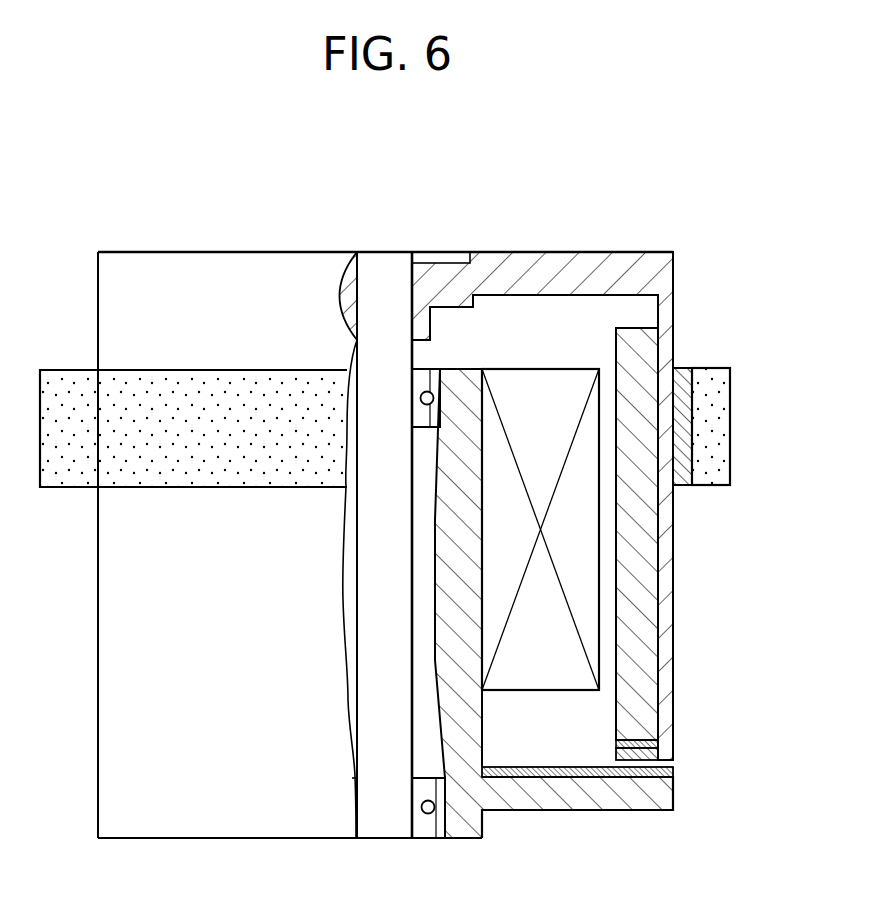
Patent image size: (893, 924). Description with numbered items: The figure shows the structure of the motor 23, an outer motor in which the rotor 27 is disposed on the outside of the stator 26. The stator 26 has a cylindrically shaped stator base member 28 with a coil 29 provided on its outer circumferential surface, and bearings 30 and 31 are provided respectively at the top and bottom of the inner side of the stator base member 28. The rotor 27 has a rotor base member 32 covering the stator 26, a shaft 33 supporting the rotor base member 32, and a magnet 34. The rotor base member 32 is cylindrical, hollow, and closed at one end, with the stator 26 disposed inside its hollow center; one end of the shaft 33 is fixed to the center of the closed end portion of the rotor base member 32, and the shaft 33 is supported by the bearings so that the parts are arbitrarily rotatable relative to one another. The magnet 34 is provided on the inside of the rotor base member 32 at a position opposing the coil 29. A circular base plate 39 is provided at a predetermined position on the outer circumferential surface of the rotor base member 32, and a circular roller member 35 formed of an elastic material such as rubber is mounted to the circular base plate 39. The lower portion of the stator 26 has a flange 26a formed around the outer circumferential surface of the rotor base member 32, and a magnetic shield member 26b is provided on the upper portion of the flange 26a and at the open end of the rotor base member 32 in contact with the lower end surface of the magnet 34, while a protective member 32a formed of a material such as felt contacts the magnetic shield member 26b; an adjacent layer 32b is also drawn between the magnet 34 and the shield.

The motor 23 is at (471, 174).
The stator 26 is at (510, 817).
The flange 26a is at (666, 805).
The magnetic shield member 26b is at (675, 771).
The rotor 27 is at (635, 250).
The stator base member 28 is at (473, 728).
The coil 29 is at (530, 388).
The bearing 30 is at (432, 368).
The bearing 31 is at (440, 823).
The rotor base member 32 is at (548, 262).
The protective member 32a is at (660, 740).
The friction pad 32b is at (668, 753).
The shaft 33 is at (383, 268).
The magnet 34 is at (616, 338).
The circular roller member 35 is at (227, 488).
The circular base plate 39 is at (676, 368).